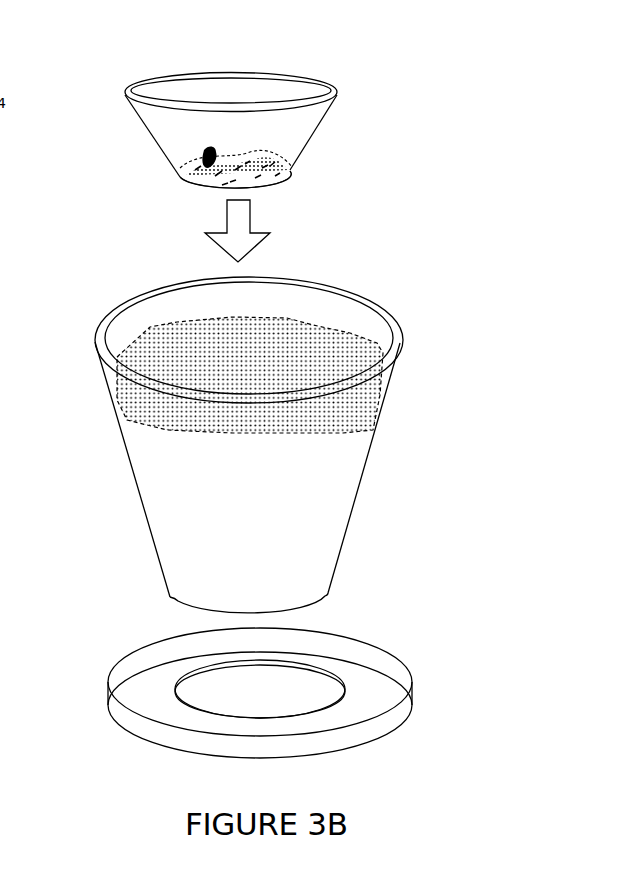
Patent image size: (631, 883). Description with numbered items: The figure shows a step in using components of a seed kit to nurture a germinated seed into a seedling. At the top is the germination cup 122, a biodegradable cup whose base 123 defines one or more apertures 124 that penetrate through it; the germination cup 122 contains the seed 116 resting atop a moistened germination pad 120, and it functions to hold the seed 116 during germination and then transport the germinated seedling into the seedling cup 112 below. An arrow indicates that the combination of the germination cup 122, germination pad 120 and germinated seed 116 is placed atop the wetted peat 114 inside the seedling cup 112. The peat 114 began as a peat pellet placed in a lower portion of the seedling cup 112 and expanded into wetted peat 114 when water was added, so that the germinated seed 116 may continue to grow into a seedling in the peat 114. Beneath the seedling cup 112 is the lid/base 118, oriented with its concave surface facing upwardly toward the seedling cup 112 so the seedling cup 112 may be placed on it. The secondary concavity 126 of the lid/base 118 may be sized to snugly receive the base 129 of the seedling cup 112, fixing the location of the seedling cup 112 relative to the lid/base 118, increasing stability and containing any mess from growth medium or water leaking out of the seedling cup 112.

The seedling cup 112 is at (165, 522).
The peat pellet 114 is at (173, 348).
The seed 116 is at (210, 150).
The lid/base 118 is at (393, 675).
The germination pad 120 is at (290, 164).
The germination cup 122 is at (340, 93).
The base 123 is at (180, 178).
The apertures 124 is at (225, 168).
The secondary concavity 126 is at (298, 700).
The base 129 is at (185, 603).